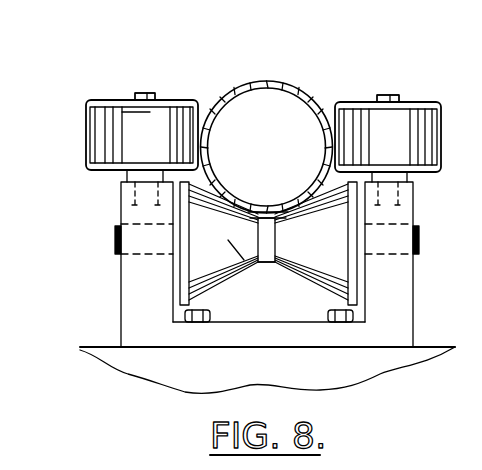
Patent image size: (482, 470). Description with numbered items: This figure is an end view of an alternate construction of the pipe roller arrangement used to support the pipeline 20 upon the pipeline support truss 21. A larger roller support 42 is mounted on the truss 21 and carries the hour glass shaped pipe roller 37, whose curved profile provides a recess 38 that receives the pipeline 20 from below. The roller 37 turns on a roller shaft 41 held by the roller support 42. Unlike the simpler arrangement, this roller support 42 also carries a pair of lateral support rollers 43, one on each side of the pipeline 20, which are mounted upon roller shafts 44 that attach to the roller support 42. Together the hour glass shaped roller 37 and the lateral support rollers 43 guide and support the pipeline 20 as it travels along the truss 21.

The pipeline 20 is at (285, 83).
The pipeline support truss 21 is at (165, 368).
The hour glass shaped pipe roller 37 is at (249, 258).
The recess 38 is at (272, 272).
The roller shaft 41 is at (115, 242).
The roller support 42 is at (138, 297).
The lateral support rollers 43 is at (95, 100).
The roller shafts 44 is at (148, 93).